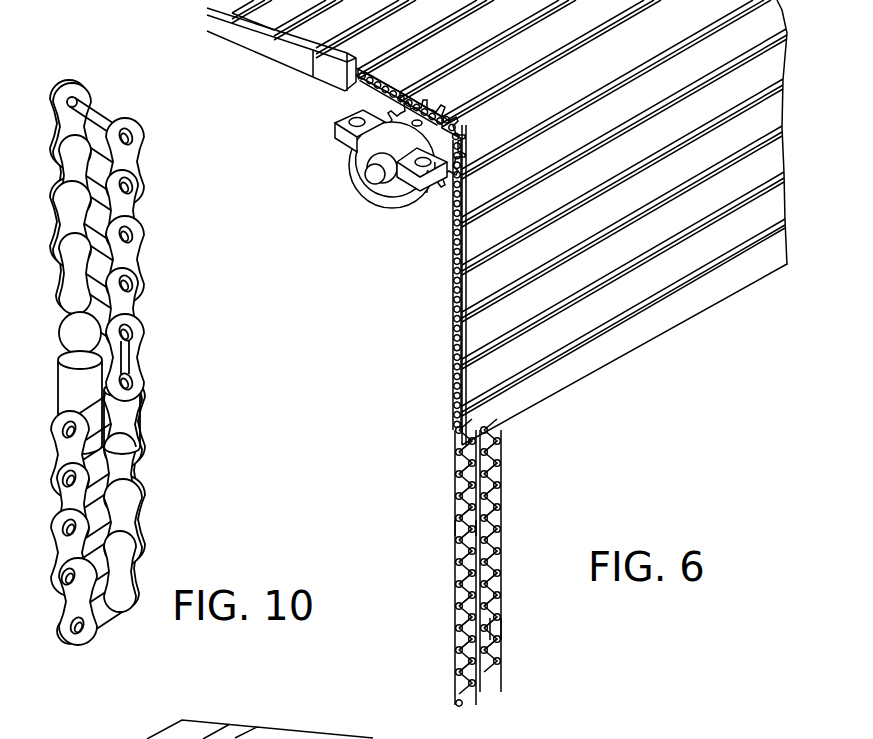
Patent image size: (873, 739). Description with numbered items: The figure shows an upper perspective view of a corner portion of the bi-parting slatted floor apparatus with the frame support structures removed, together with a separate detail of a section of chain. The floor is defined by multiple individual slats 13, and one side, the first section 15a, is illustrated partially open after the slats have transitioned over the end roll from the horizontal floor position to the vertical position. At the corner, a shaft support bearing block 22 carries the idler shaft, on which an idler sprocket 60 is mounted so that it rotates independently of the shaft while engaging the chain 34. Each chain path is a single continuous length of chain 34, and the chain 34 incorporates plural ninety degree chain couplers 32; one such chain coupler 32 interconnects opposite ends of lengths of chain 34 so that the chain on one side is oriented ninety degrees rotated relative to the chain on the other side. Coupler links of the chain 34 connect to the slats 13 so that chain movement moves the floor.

In FIG. 6, the slat 13 is at (596, 361).
In FIG. 6, the first section 15a is at (657, 352).
In FIG. 6, the shaft support bearing block 22 is at (332, 128).
In FIG. 6, the idler sprocket 60 is at (437, 197).
In FIG. 6, the chain 34 is at (502, 502).
In FIG. 10, the chain 34 is at (138, 362).
In FIG. 6, the 90 degree chain coupler 32 is at (455, 528).
In FIG. 10, the 90 degree chain coupler 32 is at (127, 415).